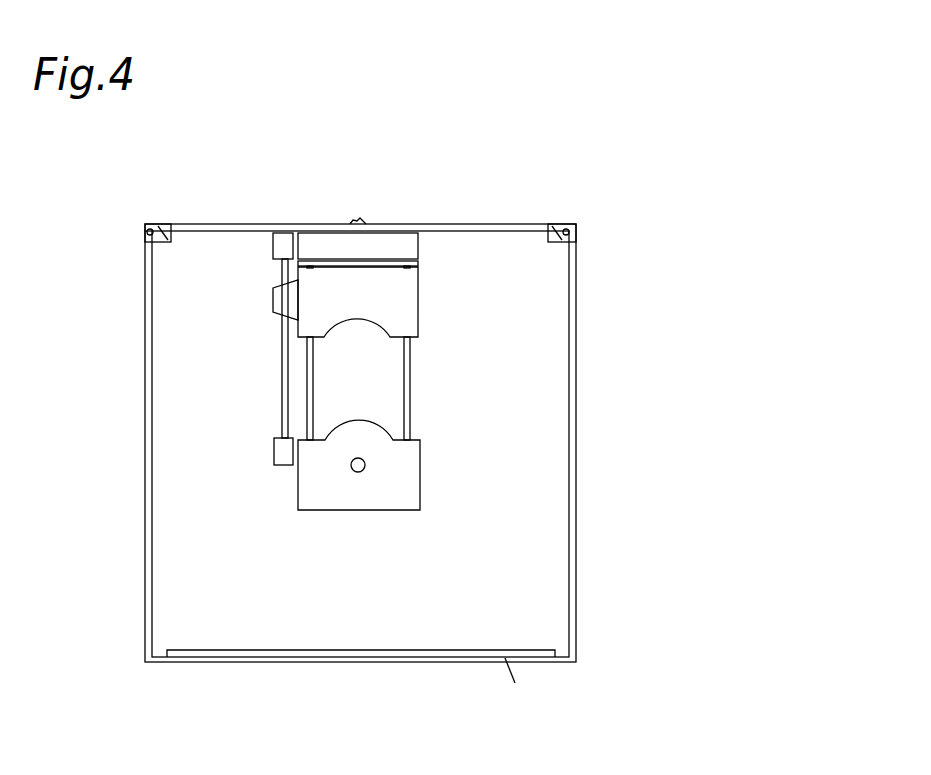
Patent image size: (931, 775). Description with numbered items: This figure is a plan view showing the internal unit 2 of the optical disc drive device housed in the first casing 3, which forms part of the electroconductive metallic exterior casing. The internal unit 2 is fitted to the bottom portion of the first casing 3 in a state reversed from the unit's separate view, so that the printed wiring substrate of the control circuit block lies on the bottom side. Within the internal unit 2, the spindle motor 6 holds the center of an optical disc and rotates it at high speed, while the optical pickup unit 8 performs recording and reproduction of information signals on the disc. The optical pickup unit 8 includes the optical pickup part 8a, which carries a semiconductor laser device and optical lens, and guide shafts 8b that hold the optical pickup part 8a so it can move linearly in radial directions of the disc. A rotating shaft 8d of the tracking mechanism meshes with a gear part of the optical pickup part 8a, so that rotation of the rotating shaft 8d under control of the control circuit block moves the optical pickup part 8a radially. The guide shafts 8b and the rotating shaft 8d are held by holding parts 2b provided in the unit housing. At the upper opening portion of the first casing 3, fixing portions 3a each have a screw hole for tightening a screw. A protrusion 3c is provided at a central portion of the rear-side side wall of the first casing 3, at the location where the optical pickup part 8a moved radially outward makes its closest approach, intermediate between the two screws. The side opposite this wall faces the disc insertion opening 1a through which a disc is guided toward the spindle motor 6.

The internal unit 2 is at (540, 577).
The holding parts 2b is at (283, 247).
The first casing 3 is at (576, 364).
The fixing portions 3a is at (163, 236).
The protrusion 3c is at (358, 219).
The spindle motor 6 is at (402, 482).
The optical pickup unit 8 is at (319, 262).
The optical pickup part 8a is at (353, 298).
The guide shafts 8b is at (406, 412).
The rotating shaft 8d is at (280, 352).
The disc insertion opening 1a is at (668, 689).